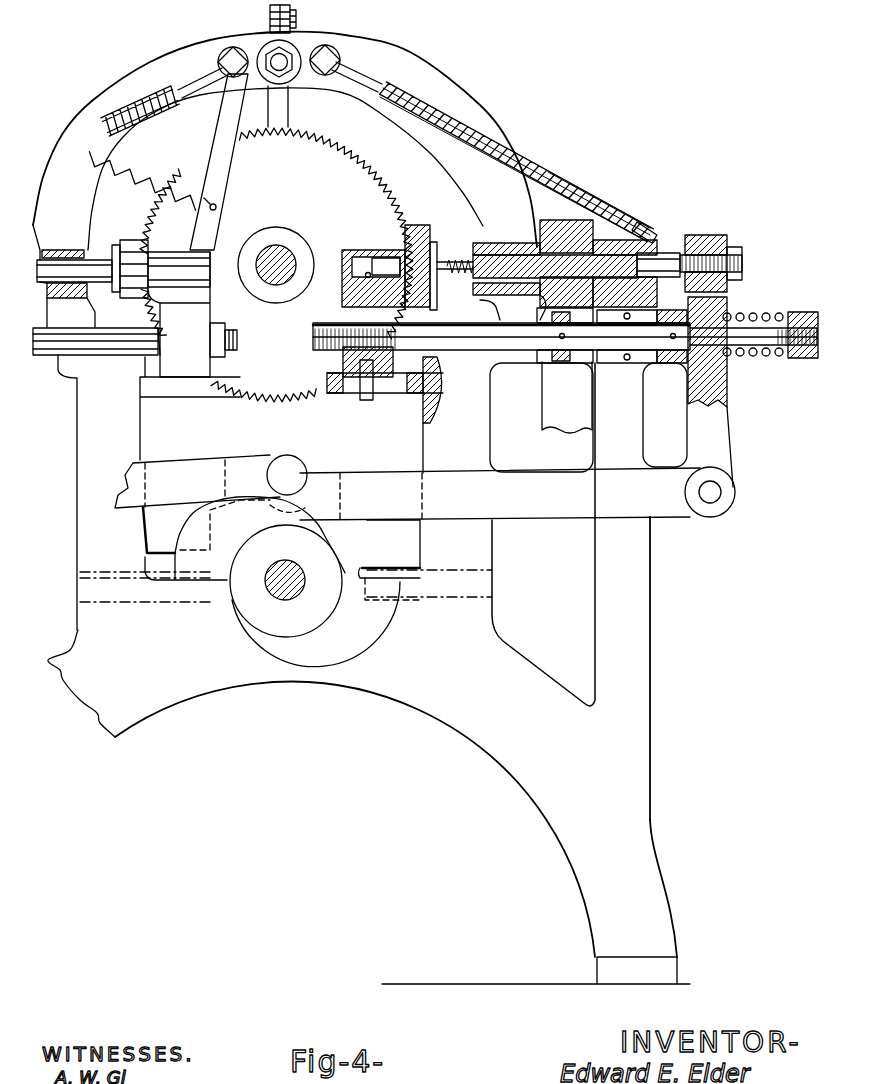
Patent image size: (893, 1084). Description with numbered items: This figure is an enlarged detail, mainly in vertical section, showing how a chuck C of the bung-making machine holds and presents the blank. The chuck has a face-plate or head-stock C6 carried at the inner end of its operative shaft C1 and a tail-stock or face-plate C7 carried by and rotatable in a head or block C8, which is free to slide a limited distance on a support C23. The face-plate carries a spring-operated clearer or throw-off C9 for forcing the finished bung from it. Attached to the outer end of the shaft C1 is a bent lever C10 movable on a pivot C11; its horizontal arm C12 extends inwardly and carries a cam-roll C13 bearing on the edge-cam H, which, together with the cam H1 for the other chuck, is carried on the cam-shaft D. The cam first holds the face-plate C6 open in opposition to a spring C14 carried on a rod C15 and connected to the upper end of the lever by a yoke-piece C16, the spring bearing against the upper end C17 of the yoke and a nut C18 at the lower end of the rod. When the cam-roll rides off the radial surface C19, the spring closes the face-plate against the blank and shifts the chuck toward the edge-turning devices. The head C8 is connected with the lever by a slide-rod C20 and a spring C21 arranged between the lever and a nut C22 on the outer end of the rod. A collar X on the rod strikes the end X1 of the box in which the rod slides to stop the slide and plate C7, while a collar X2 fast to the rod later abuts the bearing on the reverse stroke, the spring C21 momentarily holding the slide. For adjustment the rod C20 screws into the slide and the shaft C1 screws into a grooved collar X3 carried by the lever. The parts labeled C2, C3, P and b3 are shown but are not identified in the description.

The chuck C is at (440, 266).
The operative shaft C1 is at (688, 218).
The bearing block C2 is at (556, 230).
The sleeve C3 is at (548, 232).
The face-plate or head-stock C6 is at (440, 256).
The tail-stock or face-plate C7 is at (400, 250).
The head or block C8 is at (343, 290).
The spring-operated clearer or throw-off C9 is at (437, 272).
The bent lever C10 is at (722, 438).
The pivot C11 is at (713, 500).
The horizontal arm C12 is at (500, 494).
The cam-roll C13 is at (298, 498).
The spring C14 is at (556, 173).
The rod C15 is at (365, 78).
The yoke-piece C16 is at (655, 226).
The upper end of the yoke C17 is at (395, 79).
The nut C18 is at (637, 230).
The radial surface C19 is at (355, 578).
The slide-rod C20 is at (481, 351).
The spring C21 is at (753, 325).
The nut C22 is at (800, 313).
The support C23 is at (438, 412).
The collar X is at (548, 358).
The end of the box or bearing X1 is at (600, 364).
The collar or stop X2 is at (666, 365).
The grooved collar X3 is at (717, 237).
The edge-cam H is at (244, 538).
The cam H1 is at (316, 624).
The cam-shaft D is at (285, 598).
The spring P is at (138, 178).
The gear hub b3 is at (293, 236).